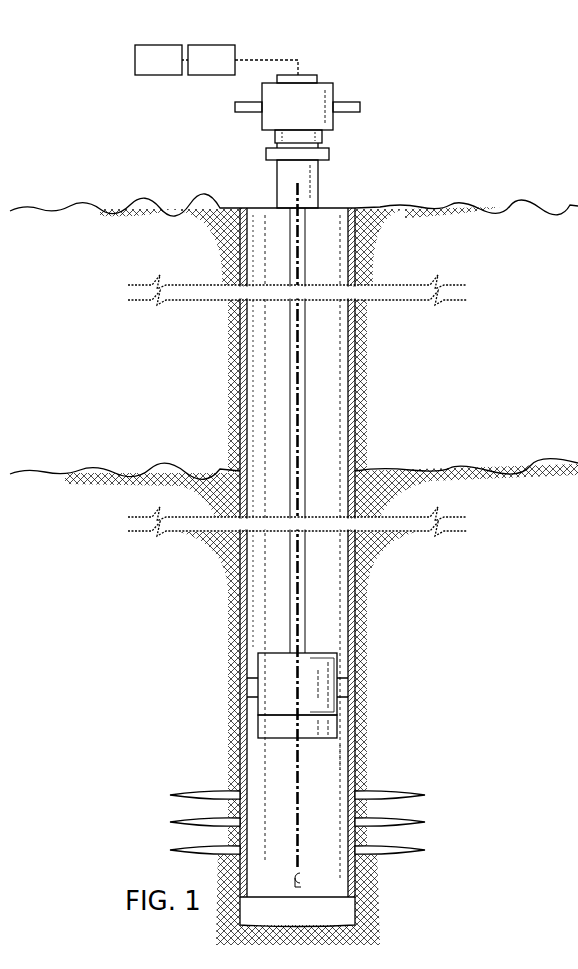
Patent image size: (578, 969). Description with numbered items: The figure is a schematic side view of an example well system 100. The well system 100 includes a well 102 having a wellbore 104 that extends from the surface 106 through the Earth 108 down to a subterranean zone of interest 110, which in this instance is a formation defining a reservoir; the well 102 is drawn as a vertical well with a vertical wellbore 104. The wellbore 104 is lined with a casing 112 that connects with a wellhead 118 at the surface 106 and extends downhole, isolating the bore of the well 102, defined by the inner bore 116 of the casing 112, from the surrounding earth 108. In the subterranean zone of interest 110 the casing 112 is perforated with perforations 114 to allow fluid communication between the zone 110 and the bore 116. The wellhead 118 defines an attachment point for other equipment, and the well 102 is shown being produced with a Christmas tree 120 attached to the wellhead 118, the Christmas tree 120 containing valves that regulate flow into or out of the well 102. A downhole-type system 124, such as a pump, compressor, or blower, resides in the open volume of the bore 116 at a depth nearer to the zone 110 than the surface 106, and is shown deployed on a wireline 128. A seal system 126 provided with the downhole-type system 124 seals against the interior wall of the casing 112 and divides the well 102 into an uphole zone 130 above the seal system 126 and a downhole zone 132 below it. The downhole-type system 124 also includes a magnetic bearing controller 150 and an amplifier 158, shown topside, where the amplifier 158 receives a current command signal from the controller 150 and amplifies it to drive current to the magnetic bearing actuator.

The well system 100 is at (463, 68).
The well 102 is at (402, 257).
The wellbore 104 is at (270, 406).
The surface 106 is at (78, 205).
The Earth 108 is at (479, 410).
The subterranean zone of interest 110 is at (498, 566).
The casing 112 is at (239, 385).
The perforations 114 is at (152, 838).
The inner bore of the casing 116 is at (333, 398).
The wellhead 118 is at (255, 146).
The Christmas tree 120 is at (349, 88).
The downhole-type system 124 is at (270, 650).
The seal system 126 is at (240, 707).
The wireline 128 is at (290, 432).
The uphole zone 130 is at (333, 642).
The downhole zone 132 is at (333, 758).
The magnetic bearing controller 150 is at (161, 60).
The amplifier 158 is at (243, 60).